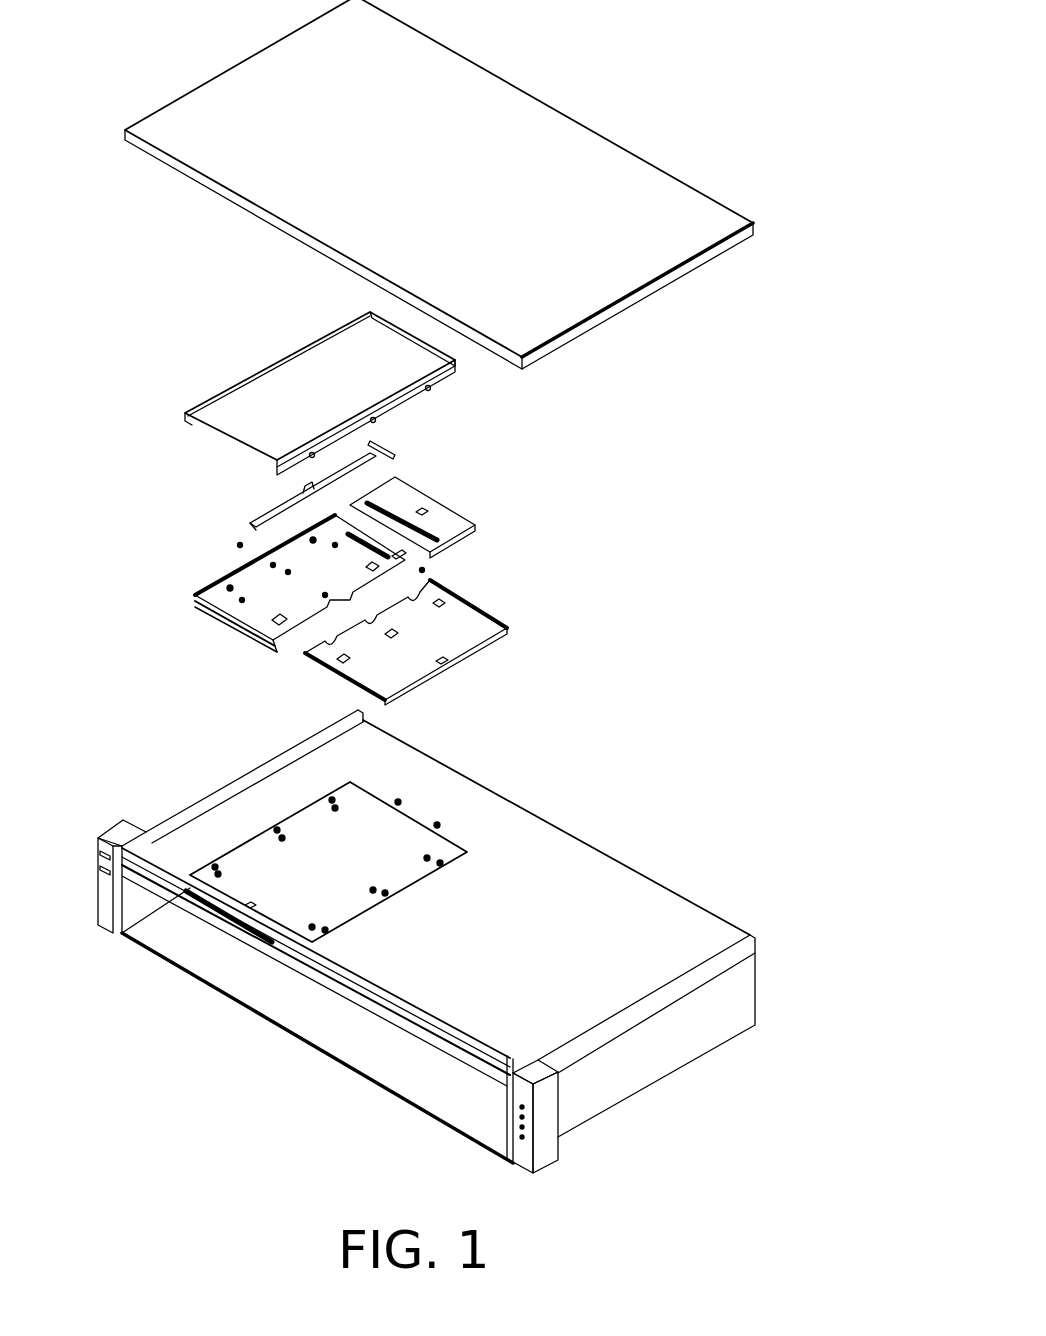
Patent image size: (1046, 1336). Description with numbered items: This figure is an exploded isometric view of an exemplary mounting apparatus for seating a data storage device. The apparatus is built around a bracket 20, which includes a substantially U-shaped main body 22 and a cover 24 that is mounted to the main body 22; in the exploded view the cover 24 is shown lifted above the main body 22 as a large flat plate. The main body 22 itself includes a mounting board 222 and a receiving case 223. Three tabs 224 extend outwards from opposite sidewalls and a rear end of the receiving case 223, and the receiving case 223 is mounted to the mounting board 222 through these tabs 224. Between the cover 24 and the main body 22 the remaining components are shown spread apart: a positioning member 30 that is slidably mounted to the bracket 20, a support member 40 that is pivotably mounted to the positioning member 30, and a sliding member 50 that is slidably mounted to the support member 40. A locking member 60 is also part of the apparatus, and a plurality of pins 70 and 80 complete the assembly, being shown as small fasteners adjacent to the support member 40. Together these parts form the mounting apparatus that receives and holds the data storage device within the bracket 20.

The bracket 20 is at (704, 1114).
The main body 22 is at (405, 1063).
The mounting board 222 is at (447, 853).
The receiving case 223 is at (297, 370).
The tabs 224 is at (443, 377).
The cover 24 is at (647, 195).
The positioning member 30 is at (440, 523).
The support member 40 is at (253, 587).
The sliding member 50 is at (447, 618).
The locking member 60 is at (280, 502).
The pins 70 is at (425, 568).
The pins 80 is at (238, 543).